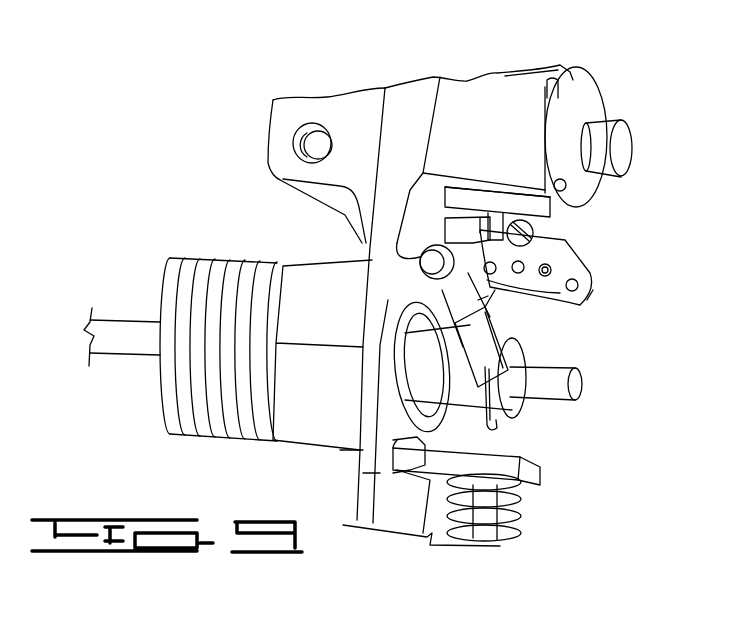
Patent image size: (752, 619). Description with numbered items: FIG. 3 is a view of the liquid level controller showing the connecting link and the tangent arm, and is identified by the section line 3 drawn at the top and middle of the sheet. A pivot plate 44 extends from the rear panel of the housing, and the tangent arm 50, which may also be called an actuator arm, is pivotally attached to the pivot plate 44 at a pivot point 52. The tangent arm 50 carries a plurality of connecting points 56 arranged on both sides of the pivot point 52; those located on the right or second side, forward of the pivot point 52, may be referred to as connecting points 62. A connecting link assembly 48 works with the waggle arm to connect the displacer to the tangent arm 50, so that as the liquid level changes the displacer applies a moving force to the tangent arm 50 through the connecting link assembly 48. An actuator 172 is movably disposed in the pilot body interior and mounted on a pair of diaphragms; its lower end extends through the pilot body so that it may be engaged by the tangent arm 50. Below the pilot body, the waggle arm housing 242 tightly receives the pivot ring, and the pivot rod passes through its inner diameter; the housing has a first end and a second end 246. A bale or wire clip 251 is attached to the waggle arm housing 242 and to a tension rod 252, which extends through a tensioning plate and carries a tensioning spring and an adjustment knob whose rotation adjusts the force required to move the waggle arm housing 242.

The section line 3- 3 is at (505, 53).
The pivot plate 44 is at (440, 213).
The actuator 172 is at (472, 207).
The connecting link assembly 48 is at (497, 310).
The pivot point 52 is at (548, 230).
The tangent arm 50 is at (593, 292).
The connecting points 56 is at (550, 268).
The connecting points 62 is at (622, 255).
The second end 246 is at (515, 406).
The bale or wire clip 251 is at (500, 425).
The tension rod 252 is at (520, 450).
The waggle arm housing 242 is at (418, 390).